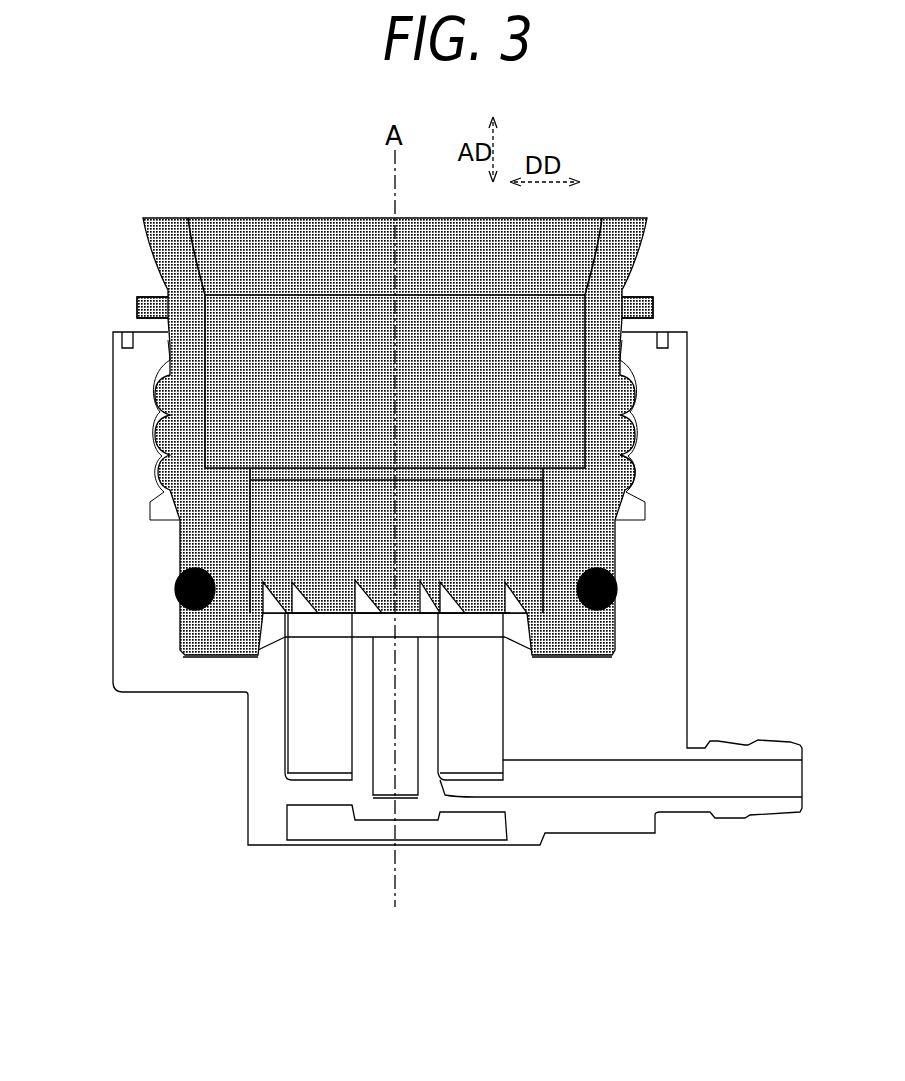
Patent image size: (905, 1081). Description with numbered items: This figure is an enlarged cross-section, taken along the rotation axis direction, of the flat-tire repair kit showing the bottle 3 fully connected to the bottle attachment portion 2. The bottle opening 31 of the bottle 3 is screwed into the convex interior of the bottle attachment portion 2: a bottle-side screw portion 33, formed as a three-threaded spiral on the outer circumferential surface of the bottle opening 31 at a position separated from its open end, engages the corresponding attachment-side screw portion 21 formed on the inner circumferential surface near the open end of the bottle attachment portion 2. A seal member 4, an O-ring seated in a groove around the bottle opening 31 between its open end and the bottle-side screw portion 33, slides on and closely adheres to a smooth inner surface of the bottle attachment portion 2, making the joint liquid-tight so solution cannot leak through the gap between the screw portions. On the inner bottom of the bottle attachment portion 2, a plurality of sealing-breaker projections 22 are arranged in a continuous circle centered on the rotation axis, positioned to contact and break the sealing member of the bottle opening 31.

The bottle attachment portion 2 is at (684, 534).
The attachment-side screw portion 21 is at (158, 430).
The sealing-breaker projections 22 is at (320, 590).
The bottle 3 is at (652, 243).
The bottle opening 31 is at (622, 340).
The bottle-side screw portion 33 is at (157, 398).
The seal member 4 is at (610, 587).